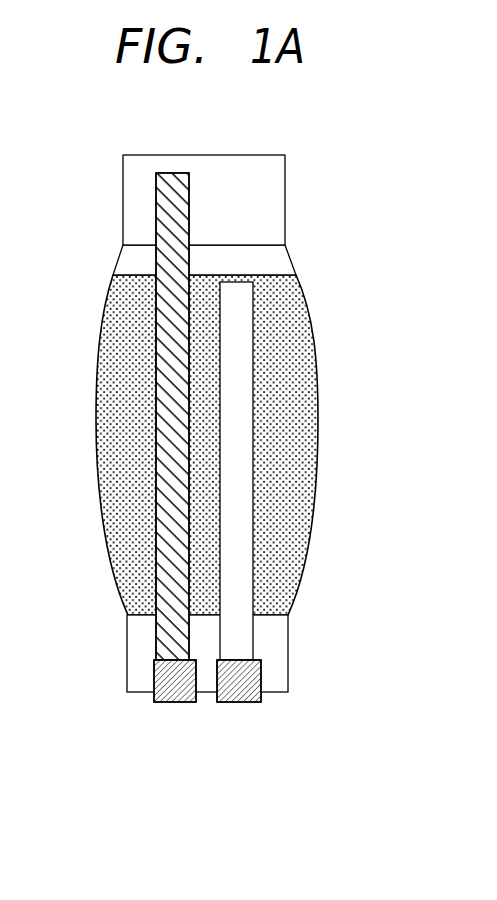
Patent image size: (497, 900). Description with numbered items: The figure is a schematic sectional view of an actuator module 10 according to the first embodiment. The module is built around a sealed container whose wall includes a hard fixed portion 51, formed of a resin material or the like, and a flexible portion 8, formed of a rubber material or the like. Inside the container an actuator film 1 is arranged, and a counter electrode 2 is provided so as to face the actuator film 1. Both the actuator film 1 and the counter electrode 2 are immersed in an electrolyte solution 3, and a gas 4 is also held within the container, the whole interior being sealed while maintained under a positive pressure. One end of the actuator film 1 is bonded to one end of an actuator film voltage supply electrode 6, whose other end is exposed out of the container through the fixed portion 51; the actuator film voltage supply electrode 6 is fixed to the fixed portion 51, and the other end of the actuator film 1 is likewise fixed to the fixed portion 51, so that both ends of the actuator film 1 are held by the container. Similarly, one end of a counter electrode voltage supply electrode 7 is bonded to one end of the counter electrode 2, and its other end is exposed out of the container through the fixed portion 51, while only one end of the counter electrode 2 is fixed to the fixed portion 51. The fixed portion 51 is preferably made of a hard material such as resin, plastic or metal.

The actuator film 1 is at (163, 372).
The counter electrode 2 is at (243, 377).
The electrolyte solution 3 is at (108, 518).
The gas 4 is at (272, 258).
The actuator film voltage supply electrode 6 is at (173, 702).
The counter electrode voltage supply electrode 7 is at (243, 702).
The flexible portion 8 is at (315, 513).
The actuator module 10 is at (220, 496).
The fixed portion 51 is at (272, 185).